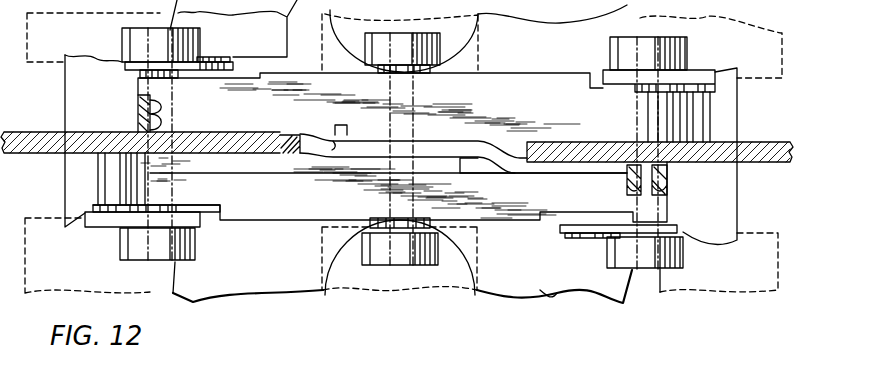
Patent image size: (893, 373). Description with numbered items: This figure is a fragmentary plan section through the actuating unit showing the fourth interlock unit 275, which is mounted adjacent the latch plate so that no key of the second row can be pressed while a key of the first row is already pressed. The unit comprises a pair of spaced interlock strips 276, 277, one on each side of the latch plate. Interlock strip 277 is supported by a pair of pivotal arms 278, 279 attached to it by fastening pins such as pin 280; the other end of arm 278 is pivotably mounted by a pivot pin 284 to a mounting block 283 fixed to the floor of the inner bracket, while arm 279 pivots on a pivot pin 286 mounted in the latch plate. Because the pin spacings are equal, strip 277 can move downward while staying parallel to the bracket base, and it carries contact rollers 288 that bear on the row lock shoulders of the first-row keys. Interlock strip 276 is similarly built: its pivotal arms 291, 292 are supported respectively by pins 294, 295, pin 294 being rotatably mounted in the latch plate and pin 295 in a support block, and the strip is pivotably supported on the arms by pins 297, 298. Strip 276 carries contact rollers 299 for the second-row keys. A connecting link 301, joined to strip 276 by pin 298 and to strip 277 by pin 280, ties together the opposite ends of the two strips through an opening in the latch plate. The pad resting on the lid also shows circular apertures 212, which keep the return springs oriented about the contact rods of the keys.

The circular apertures 212 is at (343, 260).
The fourth interlock unit 275 is at (508, 101).
The interlock strip 276 is at (241, 116).
The interlock strip 277 is at (258, 195).
The pivotal arm 278 is at (563, 235).
The pivotal arm 279 is at (95, 220).
The fastening pin 280 is at (660, 183).
The mounting block 283 is at (557, 297).
The pivot pin 284 is at (590, 236).
The pivot pin 286 is at (110, 170).
The contact rollers 288 is at (197, 245).
The pivotal arm 291 is at (697, 70).
The pivotal arm 292 is at (222, 60).
The pin 294 is at (697, 115).
The pin 295 is at (205, 55).
The pin 297 is at (637, 106).
The pin 298 is at (140, 112).
The contact rollers 299 is at (122, 44).
The connecting link 301 is at (336, 125).